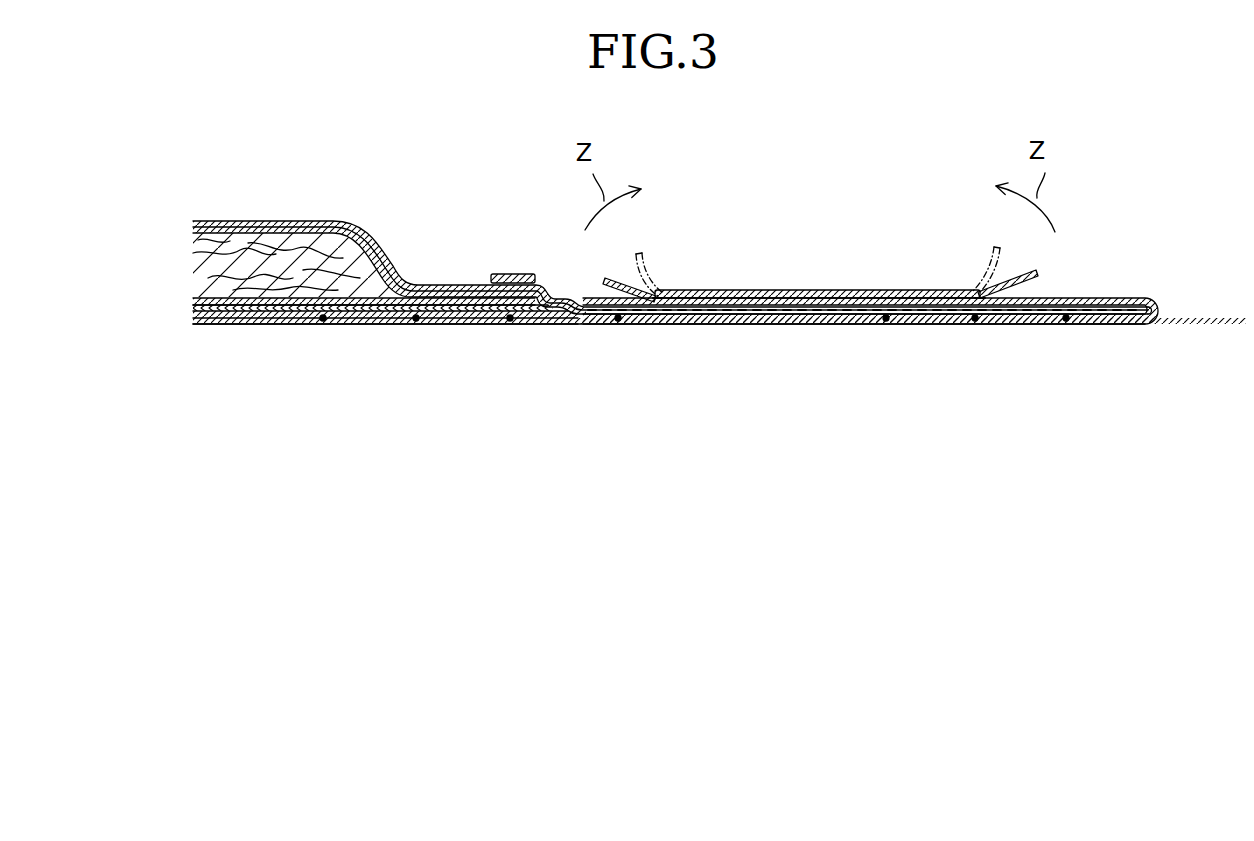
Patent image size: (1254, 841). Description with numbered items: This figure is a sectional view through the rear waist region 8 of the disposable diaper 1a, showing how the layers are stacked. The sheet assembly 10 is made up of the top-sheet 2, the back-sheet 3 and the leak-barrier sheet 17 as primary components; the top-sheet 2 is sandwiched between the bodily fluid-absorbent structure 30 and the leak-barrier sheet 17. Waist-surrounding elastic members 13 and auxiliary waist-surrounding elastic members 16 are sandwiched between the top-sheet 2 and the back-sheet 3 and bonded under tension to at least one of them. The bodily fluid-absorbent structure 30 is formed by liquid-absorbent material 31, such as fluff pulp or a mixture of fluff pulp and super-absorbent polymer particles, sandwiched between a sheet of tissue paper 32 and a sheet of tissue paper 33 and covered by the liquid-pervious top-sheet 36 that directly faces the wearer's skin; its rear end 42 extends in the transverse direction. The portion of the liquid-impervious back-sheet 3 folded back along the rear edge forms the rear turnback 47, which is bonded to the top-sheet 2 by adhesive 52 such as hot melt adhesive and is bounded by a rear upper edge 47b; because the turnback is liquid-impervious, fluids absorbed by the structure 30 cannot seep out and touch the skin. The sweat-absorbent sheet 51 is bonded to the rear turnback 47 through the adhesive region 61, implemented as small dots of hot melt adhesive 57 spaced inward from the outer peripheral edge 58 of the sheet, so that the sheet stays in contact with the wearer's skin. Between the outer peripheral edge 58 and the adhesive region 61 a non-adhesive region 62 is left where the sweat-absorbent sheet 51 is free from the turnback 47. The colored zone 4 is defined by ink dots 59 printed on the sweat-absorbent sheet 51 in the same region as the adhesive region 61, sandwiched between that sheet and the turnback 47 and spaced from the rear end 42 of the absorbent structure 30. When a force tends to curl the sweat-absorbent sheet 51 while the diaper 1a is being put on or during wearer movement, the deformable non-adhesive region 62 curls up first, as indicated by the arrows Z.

The diaper 1a is at (930, 154).
The top-sheet 36 is at (250, 213).
The sheet of tissue paper 32 is at (187, 222).
The liquid-absorbent material 31 is at (197, 256).
The sheet of tissue paper 33 is at (200, 293).
The bodily fluid-absorbent structure 30 is at (125, 202).
The top-sheet 2 is at (378, 303).
The leak-barrier sheet 17 is at (418, 309).
The back-sheet 3 is at (455, 316).
The auxiliary waist-surrounding elastic members 16 is at (315, 311).
The sheet assembly 10 is at (478, 373).
The rear turnback 47 is at (1112, 290).
The rear upper edge 47b is at (485, 268).
The adhesive 52 is at (1095, 316).
The waist-surrounding elastic members 13 is at (967, 312).
The rear end 42 is at (525, 266).
The sweat-absorbent sheet 51 is at (797, 283).
The ink dots 59 is at (685, 290).
The colored zone 4 is at (817, 294).
The adhesive region 61 is at (740, 290).
The hot melt adhesive 57 is at (650, 290).
The outer peripheral edge 58 is at (606, 274).
The non-adhesive region 62 is at (618, 274).
The rear waist region 8 is at (643, 340).